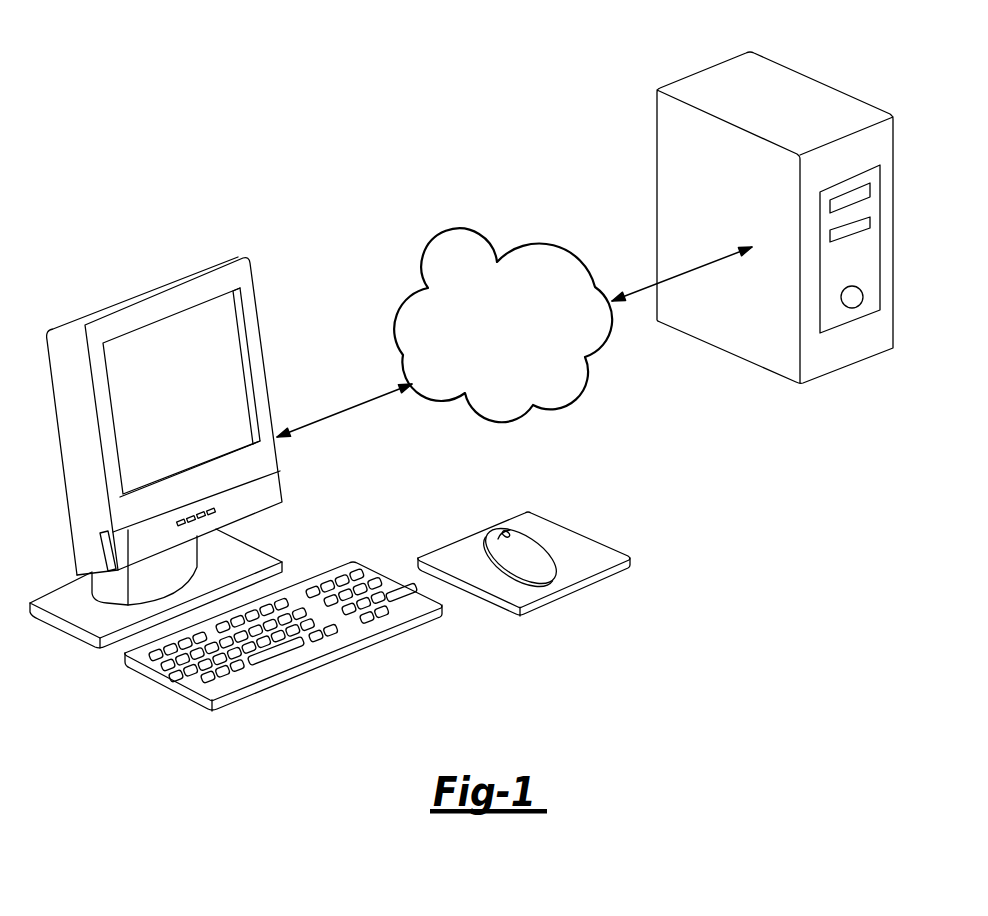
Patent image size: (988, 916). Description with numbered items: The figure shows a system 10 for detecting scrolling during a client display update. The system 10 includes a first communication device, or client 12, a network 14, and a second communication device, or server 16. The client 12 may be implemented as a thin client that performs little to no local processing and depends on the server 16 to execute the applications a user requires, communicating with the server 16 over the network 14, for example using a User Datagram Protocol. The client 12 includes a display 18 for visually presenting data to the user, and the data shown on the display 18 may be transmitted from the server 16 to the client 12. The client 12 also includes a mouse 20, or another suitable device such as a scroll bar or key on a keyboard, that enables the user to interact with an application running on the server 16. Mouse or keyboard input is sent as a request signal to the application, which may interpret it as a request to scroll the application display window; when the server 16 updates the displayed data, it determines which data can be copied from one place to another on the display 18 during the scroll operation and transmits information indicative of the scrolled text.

The system 10 is at (536, 138).
The first communication device 12 is at (156, 428).
The network 14 is at (518, 349).
The second communication device 16 is at (712, 83).
The display 18 is at (191, 406).
The mouse 20 is at (543, 557).